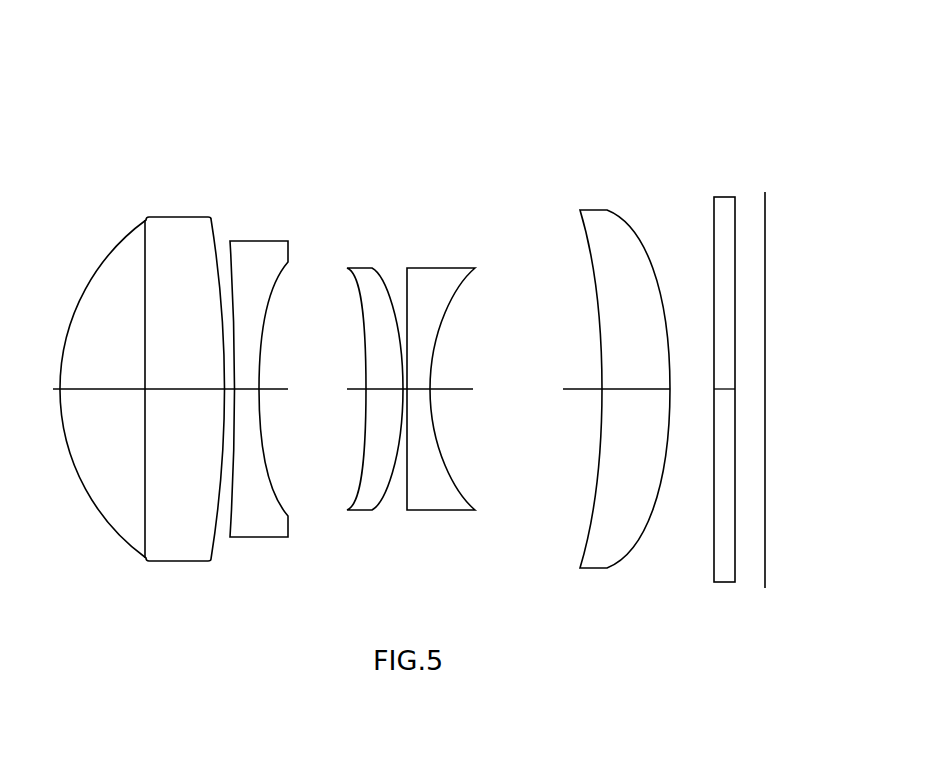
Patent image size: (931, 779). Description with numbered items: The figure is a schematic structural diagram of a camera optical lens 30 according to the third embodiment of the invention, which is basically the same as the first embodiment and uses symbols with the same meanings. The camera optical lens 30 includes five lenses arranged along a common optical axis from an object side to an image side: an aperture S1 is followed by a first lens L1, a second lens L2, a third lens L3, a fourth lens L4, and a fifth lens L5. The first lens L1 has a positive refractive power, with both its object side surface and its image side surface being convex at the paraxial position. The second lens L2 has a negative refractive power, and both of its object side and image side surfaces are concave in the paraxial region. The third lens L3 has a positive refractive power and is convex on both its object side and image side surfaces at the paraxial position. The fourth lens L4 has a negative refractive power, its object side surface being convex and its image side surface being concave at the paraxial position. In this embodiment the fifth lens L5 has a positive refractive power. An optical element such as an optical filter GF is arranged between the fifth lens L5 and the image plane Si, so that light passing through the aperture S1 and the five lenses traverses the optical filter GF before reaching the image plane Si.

The camera optical lens 30 is at (432, 46).
The aperture S1 is at (142, 375).
The first lens L1 is at (142, 375).
The second lens L2 is at (259, 378).
The third lens L3 is at (375, 376).
The fourth lens L4 is at (441, 376).
The fifth lens L5 is at (625, 376).
The optical filter GF is at (725, 377).
The image plane Si is at (765, 377).